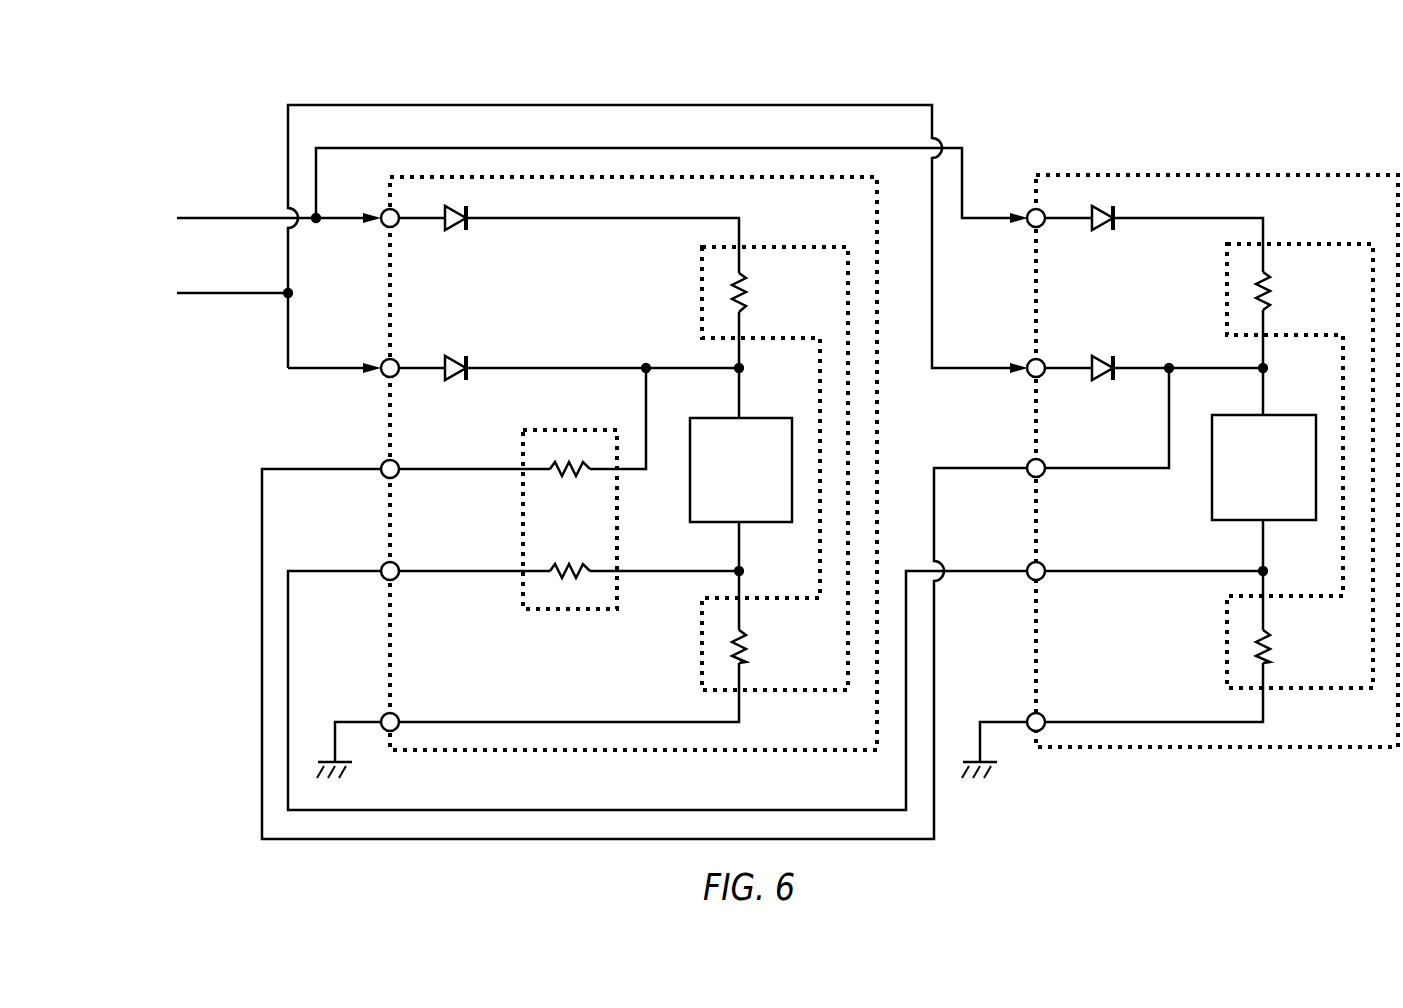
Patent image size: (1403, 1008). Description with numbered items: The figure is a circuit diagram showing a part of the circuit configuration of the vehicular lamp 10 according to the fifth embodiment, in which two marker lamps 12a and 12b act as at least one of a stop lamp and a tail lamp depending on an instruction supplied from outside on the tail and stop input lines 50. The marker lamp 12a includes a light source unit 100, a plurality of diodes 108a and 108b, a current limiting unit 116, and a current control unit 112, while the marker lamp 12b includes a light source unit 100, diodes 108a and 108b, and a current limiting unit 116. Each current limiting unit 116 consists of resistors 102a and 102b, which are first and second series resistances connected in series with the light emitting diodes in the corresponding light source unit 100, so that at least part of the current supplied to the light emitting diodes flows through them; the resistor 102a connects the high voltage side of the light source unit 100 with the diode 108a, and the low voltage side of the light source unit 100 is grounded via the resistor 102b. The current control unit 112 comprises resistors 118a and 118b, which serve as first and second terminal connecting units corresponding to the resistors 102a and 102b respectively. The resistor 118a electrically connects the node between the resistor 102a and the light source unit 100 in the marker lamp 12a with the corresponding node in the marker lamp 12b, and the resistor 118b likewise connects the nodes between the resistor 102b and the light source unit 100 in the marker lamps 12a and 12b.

The vehicular lamp 10 is at (1367, 45).
The marker lamp 12a is at (877, 413).
The marker lamp 12b is at (1284, 175).
The TAIL/STOP input lines 50 is at (177, 182).
The light source unit 100 is at (765, 418).
The resistor 102a is at (734, 292).
The resistor 102b is at (734, 648).
The diode 108a is at (468, 222).
The diode 108b is at (468, 362).
The current control unit 112 is at (522, 526).
The current limiting unit 116 is at (796, 247).
The resistor 118a is at (568, 465).
The resistor 118b is at (570, 578).